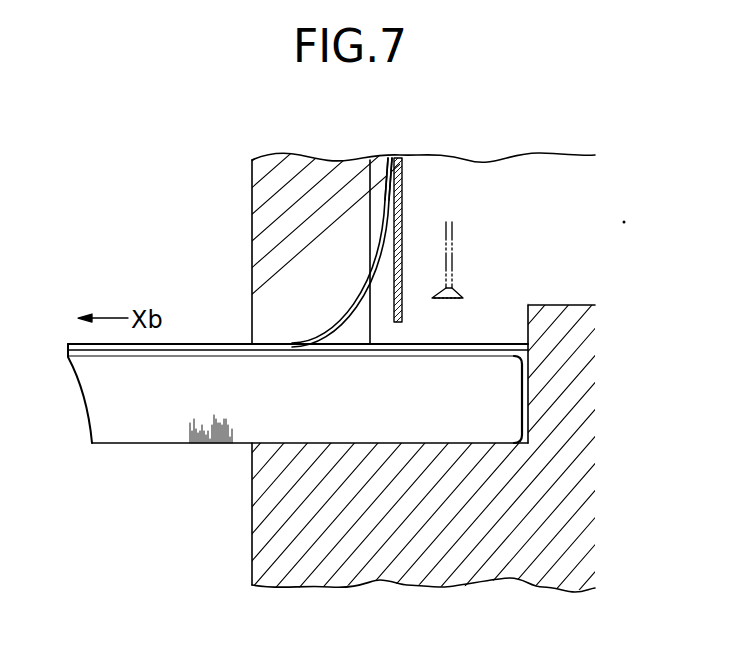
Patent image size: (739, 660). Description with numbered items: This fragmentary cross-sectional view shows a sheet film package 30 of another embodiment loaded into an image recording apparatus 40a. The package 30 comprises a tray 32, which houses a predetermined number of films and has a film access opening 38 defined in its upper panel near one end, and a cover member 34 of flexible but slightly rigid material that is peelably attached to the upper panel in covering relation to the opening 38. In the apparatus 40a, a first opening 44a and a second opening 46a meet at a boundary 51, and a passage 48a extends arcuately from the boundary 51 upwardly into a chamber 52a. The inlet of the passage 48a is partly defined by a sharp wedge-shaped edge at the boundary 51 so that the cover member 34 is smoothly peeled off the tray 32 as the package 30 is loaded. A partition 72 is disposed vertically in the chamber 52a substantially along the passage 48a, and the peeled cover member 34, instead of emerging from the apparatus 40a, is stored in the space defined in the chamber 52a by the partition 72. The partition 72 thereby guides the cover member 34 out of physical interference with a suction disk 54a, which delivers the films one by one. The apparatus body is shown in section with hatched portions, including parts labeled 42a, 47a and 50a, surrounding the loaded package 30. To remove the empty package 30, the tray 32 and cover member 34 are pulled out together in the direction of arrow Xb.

The sheet film package 30 is at (141, 431).
The tray 32 is at (173, 440).
The cover member 34 is at (390, 200).
The film access opening 38 is at (459, 346).
The image recording apparatus 40a is at (254, 511).
The upper block 42a is at (252, 211).
The first opening 44a is at (283, 347).
The second opening 46a is at (361, 351).
The top surface of lower block 47a is at (407, 443).
The passage 48a is at (343, 318).
The side block 50a is at (528, 324).
The boundary 51 is at (308, 352).
The chamber 52a is at (466, 186).
The suction disk 54a is at (455, 237).
The partition 72 is at (403, 218).